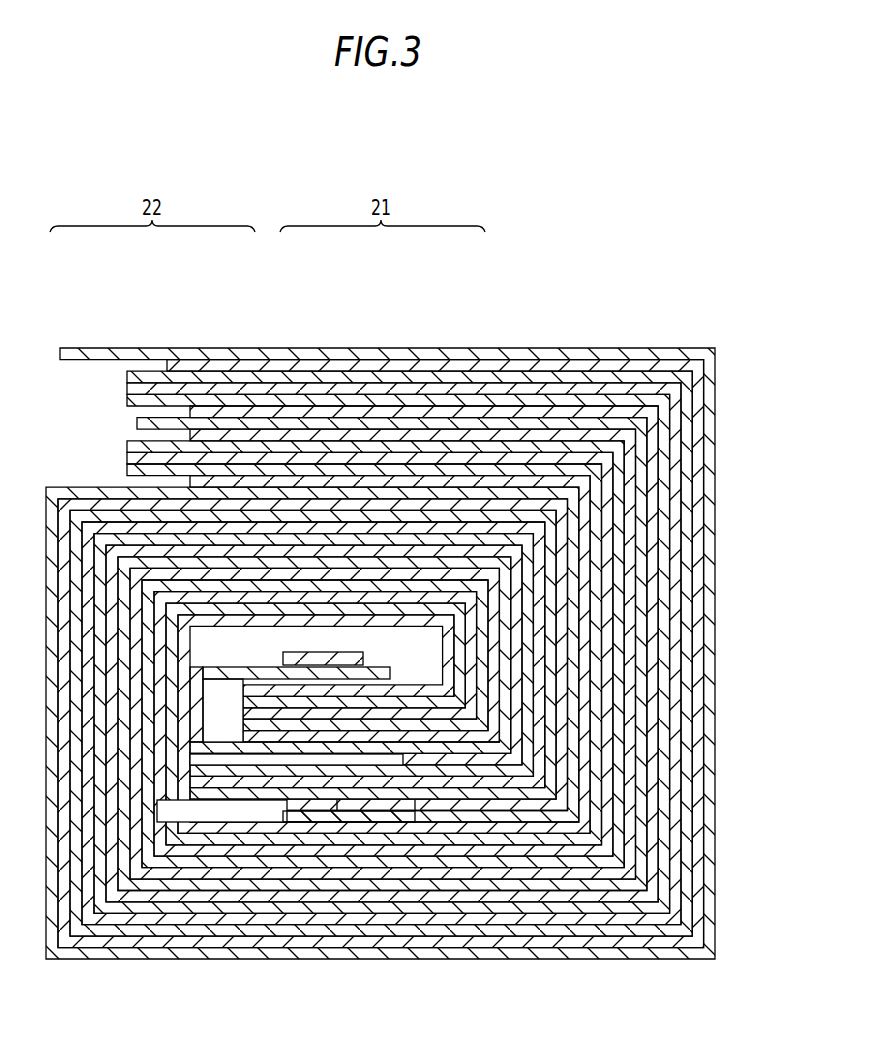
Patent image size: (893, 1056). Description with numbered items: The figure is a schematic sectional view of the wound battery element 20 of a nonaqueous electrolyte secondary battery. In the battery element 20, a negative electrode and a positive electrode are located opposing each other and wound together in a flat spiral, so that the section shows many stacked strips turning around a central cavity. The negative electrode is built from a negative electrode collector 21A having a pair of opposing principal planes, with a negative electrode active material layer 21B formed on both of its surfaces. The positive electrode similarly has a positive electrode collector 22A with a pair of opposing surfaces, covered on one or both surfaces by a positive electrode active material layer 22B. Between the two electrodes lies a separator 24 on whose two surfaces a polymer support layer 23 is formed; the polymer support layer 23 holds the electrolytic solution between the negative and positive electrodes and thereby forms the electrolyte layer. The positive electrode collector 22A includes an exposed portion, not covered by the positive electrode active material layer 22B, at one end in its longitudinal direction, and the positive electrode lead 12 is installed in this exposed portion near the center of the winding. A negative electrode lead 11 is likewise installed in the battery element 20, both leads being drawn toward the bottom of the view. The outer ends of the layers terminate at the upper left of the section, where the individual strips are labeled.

The battery element 20 is at (380, 575).
The negative electrode collector 21A is at (323, 353).
The negative electrode active material layer 21B is at (442, 480).
The positive electrode collector 22A is at (150, 383).
The positive electrode active material layer 22B is at (222, 432).
The polymer support layer 23 is at (524, 470).
The separator 24 is at (572, 460).
The negative electrode lead 11 is at (372, 800).
The positive electrode lead 12 is at (322, 657).